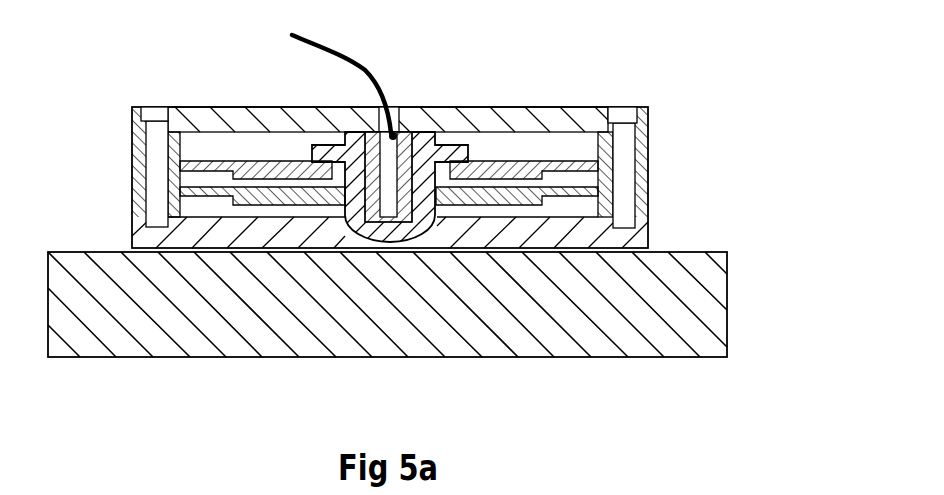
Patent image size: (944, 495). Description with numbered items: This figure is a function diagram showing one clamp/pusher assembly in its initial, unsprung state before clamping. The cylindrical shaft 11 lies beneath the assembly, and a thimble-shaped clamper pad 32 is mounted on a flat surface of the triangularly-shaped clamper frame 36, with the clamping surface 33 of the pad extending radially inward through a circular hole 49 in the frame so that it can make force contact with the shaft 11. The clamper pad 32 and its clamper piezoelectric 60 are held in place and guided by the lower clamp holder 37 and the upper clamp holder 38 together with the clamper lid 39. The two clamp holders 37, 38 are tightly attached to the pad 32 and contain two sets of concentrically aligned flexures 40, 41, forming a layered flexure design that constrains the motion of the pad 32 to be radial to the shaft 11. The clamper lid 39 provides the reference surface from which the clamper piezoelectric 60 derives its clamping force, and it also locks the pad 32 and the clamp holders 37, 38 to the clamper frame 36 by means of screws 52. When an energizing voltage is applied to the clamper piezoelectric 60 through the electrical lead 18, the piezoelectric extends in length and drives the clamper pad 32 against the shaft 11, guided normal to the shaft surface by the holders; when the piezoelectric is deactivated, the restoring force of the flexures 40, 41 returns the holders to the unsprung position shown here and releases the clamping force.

The cylindrical shaft 11 is at (697, 323).
The electrical lead 18 is at (333, 43).
The clamper pad 32 is at (445, 107).
The clamping surface 33 is at (383, 242).
The clamper frame 36 is at (132, 220).
The lower clamp holder 37 is at (645, 207).
The upper clamp holder 38 is at (647, 170).
The clamper lid 39 is at (530, 107).
The flexures 40 is at (199, 107).
The flexures 41 is at (209, 178).
The circular hole 49 is at (440, 240).
The screws 52 is at (627, 107).
The clamper piezoelectric 60 is at (368, 133).